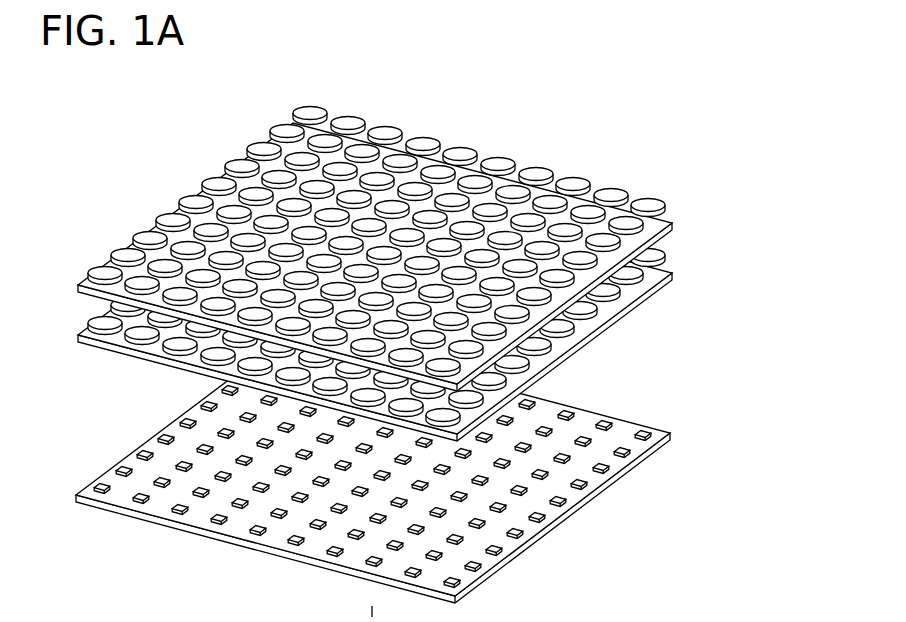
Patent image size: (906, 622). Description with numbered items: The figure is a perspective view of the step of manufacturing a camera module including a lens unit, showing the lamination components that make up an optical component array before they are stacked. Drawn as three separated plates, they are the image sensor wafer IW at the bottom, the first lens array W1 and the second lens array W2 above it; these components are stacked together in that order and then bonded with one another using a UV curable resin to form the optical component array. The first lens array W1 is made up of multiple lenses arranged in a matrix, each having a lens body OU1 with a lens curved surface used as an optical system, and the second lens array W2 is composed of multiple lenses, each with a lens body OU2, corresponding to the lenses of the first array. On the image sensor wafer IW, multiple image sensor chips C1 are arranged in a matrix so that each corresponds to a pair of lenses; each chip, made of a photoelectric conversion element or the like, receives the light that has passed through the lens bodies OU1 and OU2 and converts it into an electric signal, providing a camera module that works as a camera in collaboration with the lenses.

The first lens array W1 is at (677, 212).
The lens body OU1 is at (312, 113).
The second lens array W2 is at (678, 270).
The lens body OU2 is at (577, 321).
The image sensor wafer IW is at (670, 440).
The image sensor chip C1 is at (567, 409).